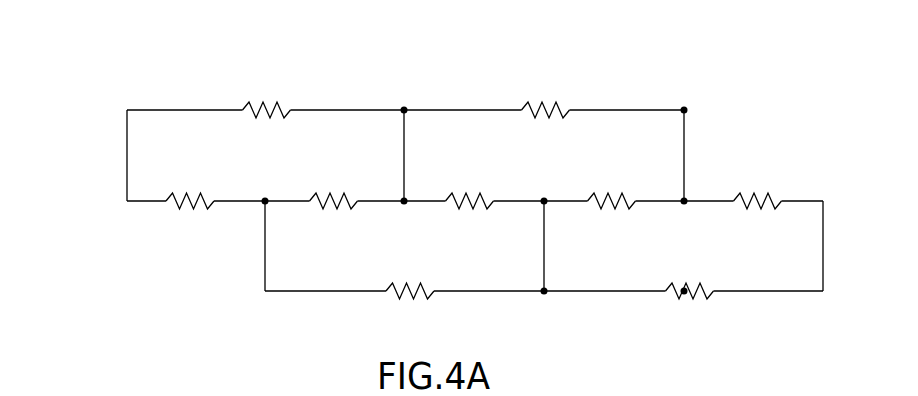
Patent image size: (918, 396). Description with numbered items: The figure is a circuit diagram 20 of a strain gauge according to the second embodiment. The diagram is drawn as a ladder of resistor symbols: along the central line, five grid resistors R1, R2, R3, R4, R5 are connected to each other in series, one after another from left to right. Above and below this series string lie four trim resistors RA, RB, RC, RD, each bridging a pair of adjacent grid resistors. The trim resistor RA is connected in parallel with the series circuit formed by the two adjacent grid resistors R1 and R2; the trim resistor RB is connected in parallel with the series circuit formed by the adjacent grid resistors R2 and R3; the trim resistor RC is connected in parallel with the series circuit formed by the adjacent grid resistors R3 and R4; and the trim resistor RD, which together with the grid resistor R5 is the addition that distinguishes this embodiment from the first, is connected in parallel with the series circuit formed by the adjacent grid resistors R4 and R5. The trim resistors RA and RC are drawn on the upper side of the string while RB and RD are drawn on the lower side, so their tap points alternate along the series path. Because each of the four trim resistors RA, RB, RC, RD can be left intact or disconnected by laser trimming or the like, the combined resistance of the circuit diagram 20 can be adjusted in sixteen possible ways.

The circuit diagram 20 is at (112, 97).
The grid resistor R1 is at (190, 185).
The grid resistor R2 is at (334, 185).
The grid resistor R3 is at (470, 185).
The grid resistor R4 is at (612, 185).
The grid resistor R5 is at (758, 185).
The trim resistor RA is at (267, 94).
The trim resistor RB is at (410, 309).
The trim resistor RC is at (546, 94).
The trim resistor RD is at (690, 309).